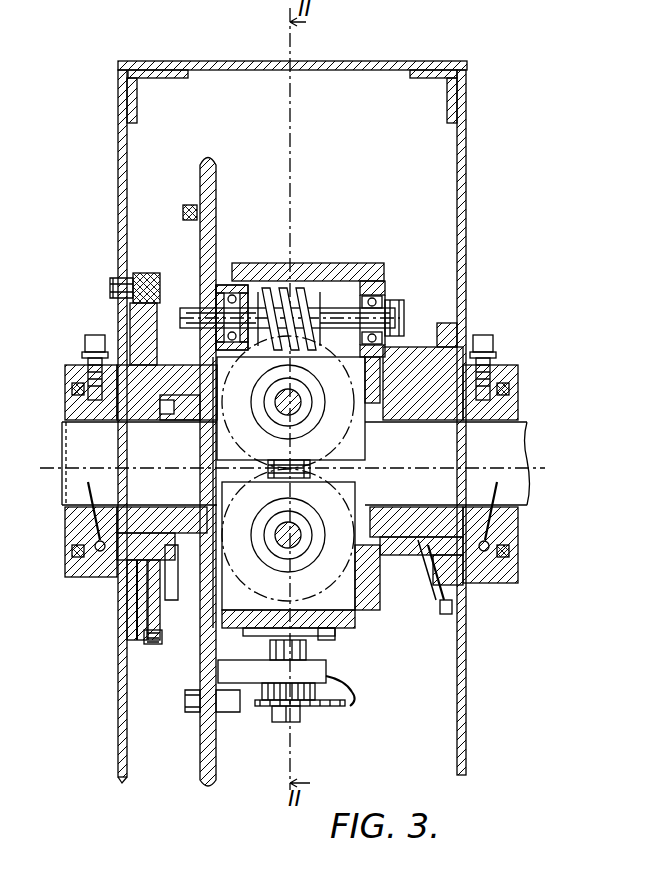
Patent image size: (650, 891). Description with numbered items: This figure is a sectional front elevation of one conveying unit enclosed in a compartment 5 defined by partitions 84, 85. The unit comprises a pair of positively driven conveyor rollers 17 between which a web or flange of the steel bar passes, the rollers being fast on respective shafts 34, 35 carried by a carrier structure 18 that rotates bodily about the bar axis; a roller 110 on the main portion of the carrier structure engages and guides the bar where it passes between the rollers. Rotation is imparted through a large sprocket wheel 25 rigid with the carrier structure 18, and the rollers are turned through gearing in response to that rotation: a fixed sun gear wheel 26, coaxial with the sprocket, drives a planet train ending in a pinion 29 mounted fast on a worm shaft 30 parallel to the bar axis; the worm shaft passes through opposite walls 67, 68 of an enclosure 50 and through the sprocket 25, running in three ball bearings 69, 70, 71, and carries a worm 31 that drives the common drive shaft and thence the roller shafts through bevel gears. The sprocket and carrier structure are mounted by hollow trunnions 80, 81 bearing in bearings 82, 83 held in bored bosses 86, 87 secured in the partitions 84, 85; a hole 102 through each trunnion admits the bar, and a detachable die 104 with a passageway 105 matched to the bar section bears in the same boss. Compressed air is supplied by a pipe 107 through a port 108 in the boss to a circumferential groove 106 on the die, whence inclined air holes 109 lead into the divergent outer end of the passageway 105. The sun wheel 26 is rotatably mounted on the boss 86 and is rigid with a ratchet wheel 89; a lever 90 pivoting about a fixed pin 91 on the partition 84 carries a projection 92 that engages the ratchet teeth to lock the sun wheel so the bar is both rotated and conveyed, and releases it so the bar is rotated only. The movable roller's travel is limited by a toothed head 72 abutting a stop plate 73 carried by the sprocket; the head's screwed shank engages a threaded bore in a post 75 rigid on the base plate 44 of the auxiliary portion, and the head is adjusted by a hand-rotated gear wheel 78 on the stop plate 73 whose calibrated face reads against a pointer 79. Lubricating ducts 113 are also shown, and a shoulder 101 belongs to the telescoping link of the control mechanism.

The compartment 5 is at (232, 72).
The partition 84 is at (118, 146).
The partition 85 is at (466, 148).
The sprocket wheel 25 is at (216, 186).
The pinion 29 is at (183, 206).
The lever 90 is at (170, 273).
The fixed pin 91 is at (136, 303).
The projection 92 is at (150, 273).
The ball bearing 70 is at (240, 285).
The ball bearing 71 is at (224, 285).
The wall of enclosure 68 is at (246, 285).
The carrier structure 18 is at (338, 263).
The enclosure 50 is at (368, 262).
The wall of enclosure 67 is at (380, 296).
The ball bearing 69 is at (385, 302).
The worm shaft 30 is at (262, 316).
The worm 31 is at (306, 292).
The conveyor rollers 17 is at (217, 440).
The shaft 34 is at (310, 398).
The shaft 35 is at (296, 548).
The roller 110 is at (268, 470).
The shoulder 101 is at (160, 469).
The hole 102 is at (410, 465).
The passageway 105 is at (92, 420).
The detachable die 104 is at (90, 545).
The circumferential groove 106 is at (98, 552).
The air holes 109 is at (80, 396).
The port 108 is at (135, 420).
The bored boss 86 is at (170, 415).
The bored boss 87 is at (440, 340).
The pipe 107 is at (95, 335).
The trunnion 80 is at (165, 510).
The trunnion 81 is at (412, 515).
The bearing 82 is at (180, 575).
The sun gear wheel 26 is at (162, 605).
The ratchet wheel 89 is at (160, 640).
The lubricating ducts 113 is at (138, 640).
The bearing 83 is at (424, 556).
The base plate 44 is at (340, 633).
The post 75 is at (270, 652).
The stop plate 73 is at (308, 672).
The head 72 is at (262, 692).
The gear wheel 78 is at (324, 706).
The pointer 79 is at (352, 704).